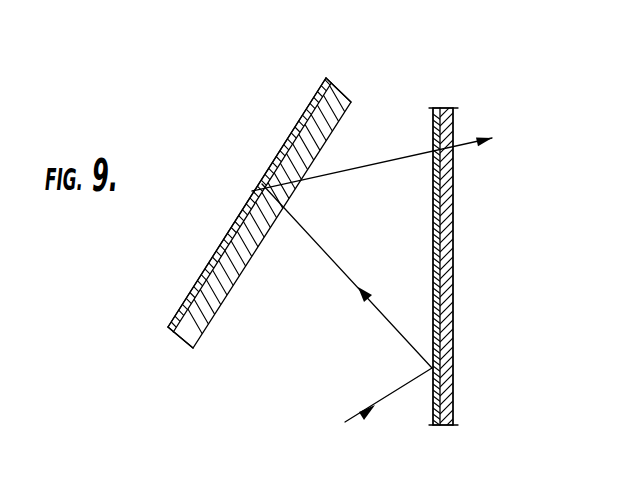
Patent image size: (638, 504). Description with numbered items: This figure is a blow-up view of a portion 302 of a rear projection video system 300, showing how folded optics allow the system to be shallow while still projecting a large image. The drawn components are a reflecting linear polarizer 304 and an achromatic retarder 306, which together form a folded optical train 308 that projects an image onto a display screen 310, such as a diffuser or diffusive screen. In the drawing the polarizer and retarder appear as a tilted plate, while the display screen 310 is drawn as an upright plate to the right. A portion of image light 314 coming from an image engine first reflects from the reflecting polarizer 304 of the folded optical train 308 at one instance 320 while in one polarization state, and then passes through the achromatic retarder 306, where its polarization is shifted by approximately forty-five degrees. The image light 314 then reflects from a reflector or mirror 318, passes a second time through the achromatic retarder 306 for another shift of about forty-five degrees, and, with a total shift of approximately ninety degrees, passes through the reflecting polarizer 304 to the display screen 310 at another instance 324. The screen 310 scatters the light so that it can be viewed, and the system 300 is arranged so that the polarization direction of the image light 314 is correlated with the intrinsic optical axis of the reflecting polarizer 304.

The rear projection video system 300 is at (487, 59).
The portion of the rear projection video system 302 is at (393, 54).
The reflecting linear polarizer 304 is at (432, 212).
The achromatic retarder 306 is at (352, 103).
The folded optical train 308 is at (281, 362).
The display screen 310 is at (453, 226).
The image light 314 is at (422, 151).
The reflector or mirror 318 is at (283, 150).
The first instance of reflection 320 is at (414, 325).
The second instance of transmission 324 is at (468, 156).